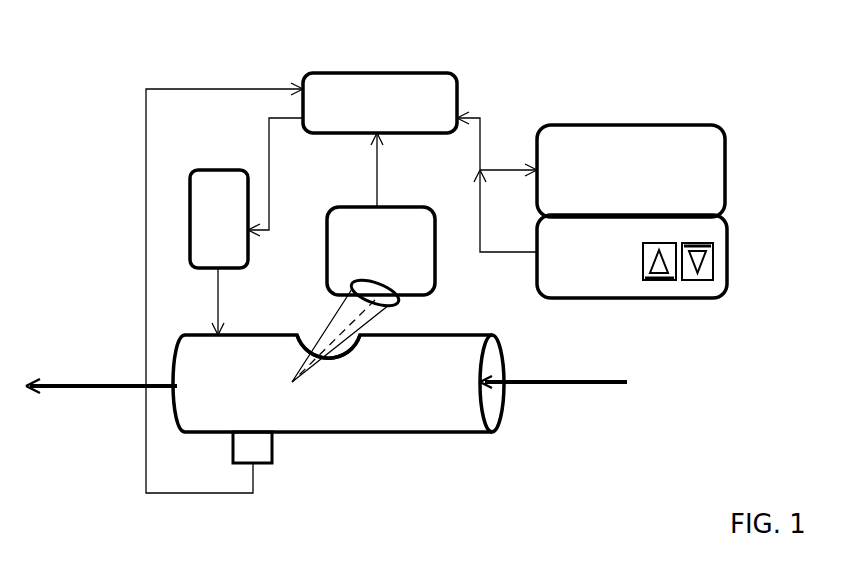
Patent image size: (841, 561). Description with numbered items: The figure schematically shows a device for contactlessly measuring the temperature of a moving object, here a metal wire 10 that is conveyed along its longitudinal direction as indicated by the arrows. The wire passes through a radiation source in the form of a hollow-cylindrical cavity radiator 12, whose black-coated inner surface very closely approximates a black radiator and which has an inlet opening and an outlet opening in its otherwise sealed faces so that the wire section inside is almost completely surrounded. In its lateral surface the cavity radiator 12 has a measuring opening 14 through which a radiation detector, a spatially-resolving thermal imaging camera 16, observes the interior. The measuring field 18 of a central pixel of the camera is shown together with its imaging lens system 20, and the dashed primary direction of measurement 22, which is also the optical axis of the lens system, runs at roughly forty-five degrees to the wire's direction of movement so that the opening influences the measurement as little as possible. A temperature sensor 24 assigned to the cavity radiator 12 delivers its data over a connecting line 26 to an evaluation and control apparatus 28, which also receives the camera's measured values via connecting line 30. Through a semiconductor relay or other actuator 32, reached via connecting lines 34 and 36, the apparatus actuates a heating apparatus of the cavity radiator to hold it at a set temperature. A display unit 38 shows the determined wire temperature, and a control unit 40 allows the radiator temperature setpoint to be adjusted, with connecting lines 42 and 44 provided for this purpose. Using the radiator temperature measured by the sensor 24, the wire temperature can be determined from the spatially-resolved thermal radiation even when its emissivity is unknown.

The metal wire 10 is at (80, 380).
The cavity radiator 12 is at (437, 415).
The measuring opening 14 is at (312, 350).
The thermal imaging camera 16 is at (421, 270).
The measuring field 18 is at (375, 310).
The imaging lens system 20 is at (352, 286).
The primary direction of measurement 22 is at (338, 337).
The temperature sensor 24 is at (259, 470).
The connecting line 26 is at (178, 88).
The evaluation and control apparatus 28 is at (376, 82).
The connecting line 30 is at (383, 172).
The semiconductor relay 32 is at (208, 170).
The connecting line 34 is at (268, 150).
The connecting line 36 is at (217, 296).
The display unit 38 is at (613, 123).
The control unit 40 is at (607, 281).
The connecting line 42 is at (482, 135).
The connecting line 44 is at (482, 225).